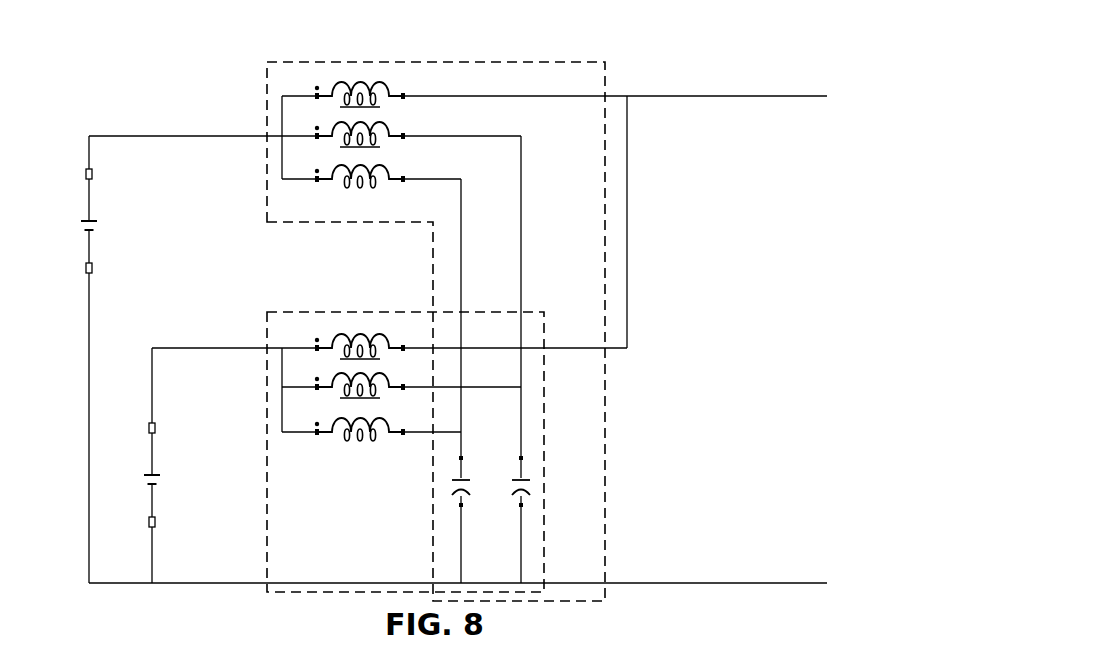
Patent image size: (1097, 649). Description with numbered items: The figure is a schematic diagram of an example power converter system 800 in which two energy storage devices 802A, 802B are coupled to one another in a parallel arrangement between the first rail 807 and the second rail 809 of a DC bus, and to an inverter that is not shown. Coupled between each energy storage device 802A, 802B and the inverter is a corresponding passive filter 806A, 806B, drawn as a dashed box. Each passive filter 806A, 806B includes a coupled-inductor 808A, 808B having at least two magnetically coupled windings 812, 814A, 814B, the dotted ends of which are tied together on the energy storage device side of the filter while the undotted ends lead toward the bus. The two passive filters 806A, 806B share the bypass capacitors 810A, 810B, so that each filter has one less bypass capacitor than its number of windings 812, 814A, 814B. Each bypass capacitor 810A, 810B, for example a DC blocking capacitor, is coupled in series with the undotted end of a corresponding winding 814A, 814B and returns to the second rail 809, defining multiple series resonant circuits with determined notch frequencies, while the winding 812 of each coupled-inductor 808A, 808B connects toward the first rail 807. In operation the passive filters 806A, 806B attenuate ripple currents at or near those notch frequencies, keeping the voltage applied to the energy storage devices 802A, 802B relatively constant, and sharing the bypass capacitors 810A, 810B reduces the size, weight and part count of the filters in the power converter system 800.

The power converter system 800 is at (822, 48).
The energy storage device 802A is at (83, 227).
The energy storage device 802B is at (157, 472).
The passive filter 806A is at (267, 125).
The passive filter 806B is at (280, 312).
The first rail 807 is at (665, 96).
The coupled-inductor 808A is at (363, 82).
The coupled-inductor 808B is at (328, 340).
The second rail 809 is at (645, 585).
The bypass capacitor 810A is at (452, 481).
The bypass capacitor 810B is at (520, 485).
The winding 812 is at (410, 83).
The winding 814A is at (427, 113).
The winding 814B is at (427, 155).